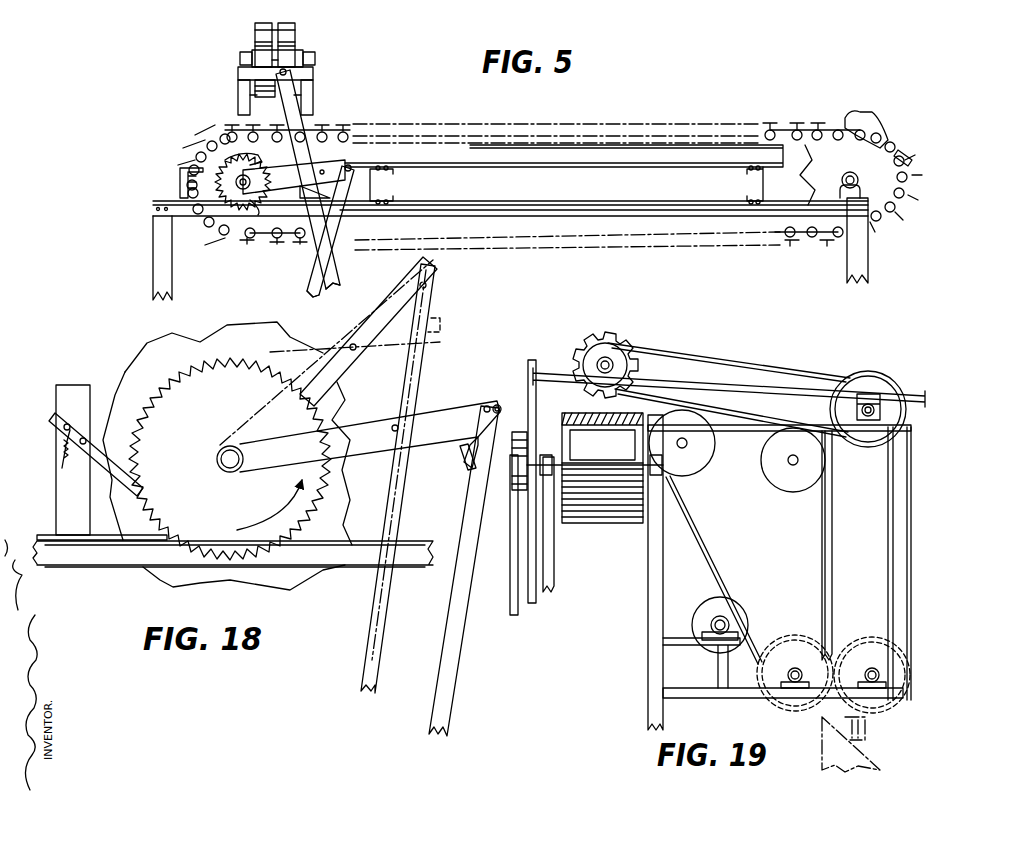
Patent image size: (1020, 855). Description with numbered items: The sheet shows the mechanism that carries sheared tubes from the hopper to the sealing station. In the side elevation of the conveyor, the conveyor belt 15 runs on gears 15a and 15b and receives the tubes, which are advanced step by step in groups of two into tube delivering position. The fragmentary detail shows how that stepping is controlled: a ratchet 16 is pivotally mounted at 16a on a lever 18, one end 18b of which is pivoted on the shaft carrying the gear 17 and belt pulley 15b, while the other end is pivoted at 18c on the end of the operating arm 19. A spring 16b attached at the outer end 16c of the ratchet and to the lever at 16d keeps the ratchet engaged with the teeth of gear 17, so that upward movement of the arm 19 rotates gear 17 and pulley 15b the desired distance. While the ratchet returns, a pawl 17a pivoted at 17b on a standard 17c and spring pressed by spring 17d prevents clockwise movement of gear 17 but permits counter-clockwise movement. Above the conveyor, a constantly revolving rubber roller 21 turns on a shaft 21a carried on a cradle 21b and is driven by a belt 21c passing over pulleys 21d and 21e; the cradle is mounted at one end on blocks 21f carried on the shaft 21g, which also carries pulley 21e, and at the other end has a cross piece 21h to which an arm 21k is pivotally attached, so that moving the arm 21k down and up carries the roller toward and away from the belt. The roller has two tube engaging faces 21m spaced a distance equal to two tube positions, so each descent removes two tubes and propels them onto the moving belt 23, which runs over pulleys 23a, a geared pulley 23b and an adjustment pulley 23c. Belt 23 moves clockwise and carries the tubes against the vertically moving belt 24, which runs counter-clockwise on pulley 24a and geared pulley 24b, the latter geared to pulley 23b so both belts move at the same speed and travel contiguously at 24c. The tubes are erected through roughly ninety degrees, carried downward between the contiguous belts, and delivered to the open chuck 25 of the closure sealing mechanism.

In FIG. 5, the conveyor belt 15 is at (778, 128).
In FIG. 19, the conveyor belt 15 is at (611, 525).
In FIG. 5, the gear 15a is at (905, 152).
In FIG. 5, the gear (belt pulley) 15b is at (183, 172).
In FIG. 18, the gear (belt pulley) 15b is at (150, 360).
In FIG. 5, the ratchet 16 is at (290, 179).
In FIG. 18, the ratchet 16 is at (370, 406).
In FIG. 18, the pivot of ratchet 16a is at (394, 431).
In FIG. 18, the spring 16b is at (462, 451).
In FIG. 5, the outer end of ratchet 16c is at (872, 118).
In FIG. 18, the outer end of ratchet 16c is at (465, 470).
In FIG. 18, the spring attachment point on lever 16d is at (487, 404).
In FIG. 5, the gear 17 is at (213, 205).
In FIG. 18, the gear 17 is at (230, 459).
In FIG. 19, the gear 17 is at (525, 432).
In FIG. 18, the pawl 17a is at (112, 458).
In FIG. 18, the pivot of pawl 17b is at (78, 466).
In FIG. 18, the standard 17c is at (60, 399).
In FIG. 18, the spring 17d is at (66, 440).
In FIG. 5, the lever 18 is at (308, 179).
In FIG. 18, the lever 18 is at (432, 406).
In FIG. 18, the end of lever 18b is at (236, 468).
In FIG. 18, the pivot of lever on operating arm 18c is at (498, 405).
In FIG. 5, the operating arm 19 is at (340, 17).
In FIG. 18, the operating arm 19 is at (452, 668).
In FIG. 19, the operating arm 19 is at (509, 606).
In FIG. 5, the roller 21 is at (255, 47).
In FIG. 19, the roller 21 is at (596, 339).
In FIG. 5, the shaft 21a is at (315, 58).
In FIG. 19, the shaft 21a is at (590, 364).
In FIG. 19, the cradle 21b is at (790, 392).
In FIG. 19, the belt 21c is at (738, 369).
In FIG. 5, the pulley 21d is at (300, 55).
In FIG. 19, the pulley 21d is at (620, 356).
In FIG. 19, the pulley 21e is at (880, 386).
In FIG. 19, the blocks 21f is at (860, 412).
In FIG. 19, the shaft 21g is at (868, 392).
In FIG. 5, the cross piece 21h is at (258, 72).
In FIG. 5, the arm 21k is at (336, 286).
In FIG. 19, the arm 21k is at (535, 606).
In FIG. 5, the tube engaging faces 21m is at (273, 16).
In FIG. 19, the belt 23 is at (720, 563).
In FIG. 19, the pulleys 23a is at (690, 475).
In FIG. 19, the geared pulley 23b is at (795, 636).
In FIG. 19, the adjustment pulley 23c is at (712, 606).
In FIG. 19, the belt 24 is at (912, 531).
In FIG. 19, the pulley 24a is at (912, 428).
In FIG. 19, the geared pulley 24b is at (873, 640).
In FIG. 19, the contiguous portions of belts 24c is at (833, 528).
In FIG. 19, the open chuck 25 is at (882, 740).